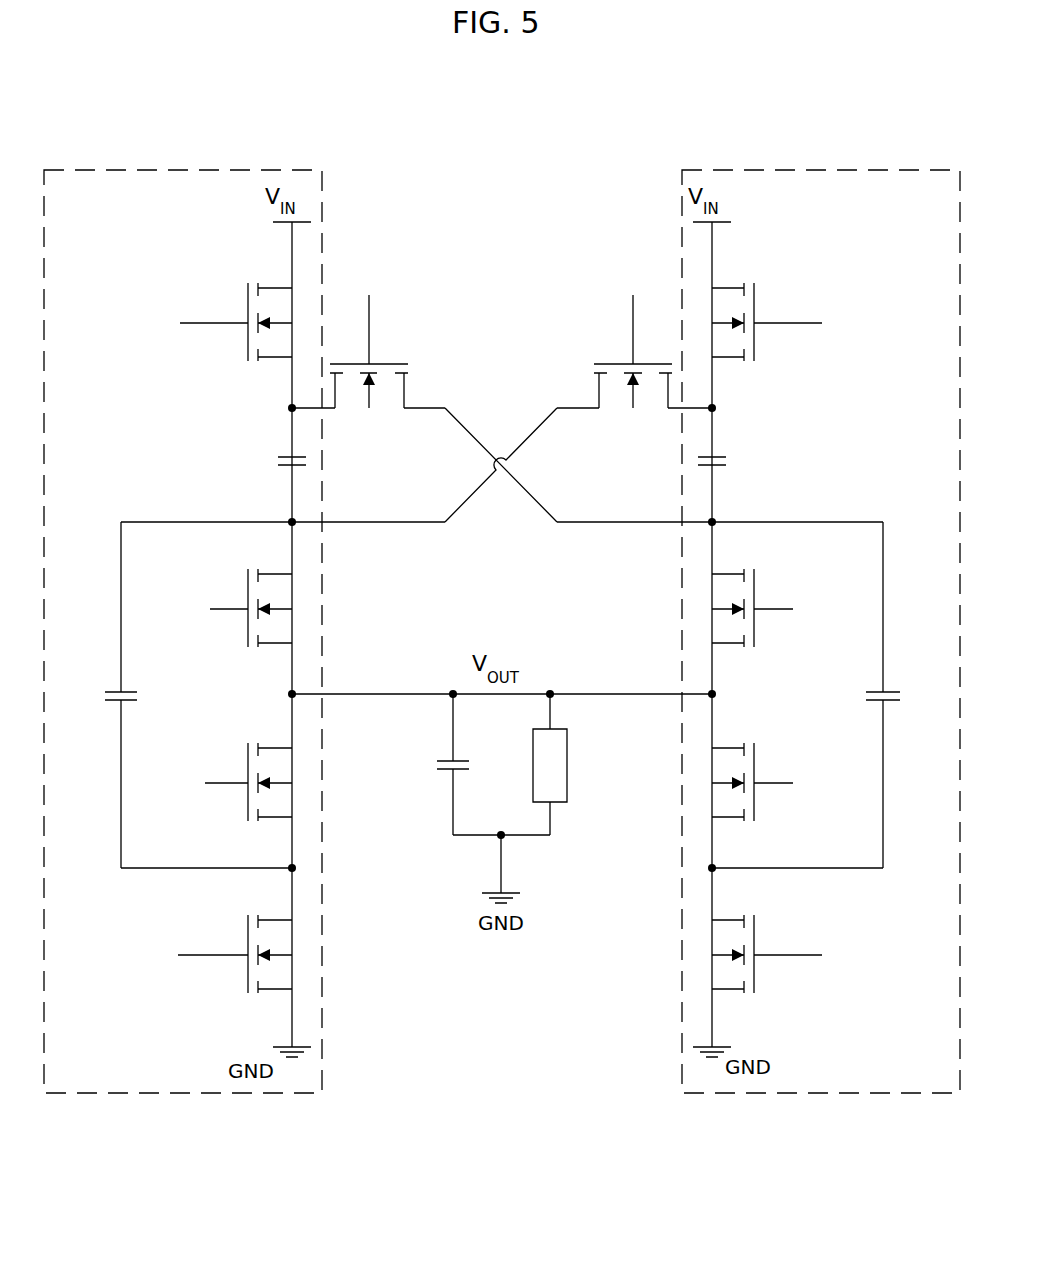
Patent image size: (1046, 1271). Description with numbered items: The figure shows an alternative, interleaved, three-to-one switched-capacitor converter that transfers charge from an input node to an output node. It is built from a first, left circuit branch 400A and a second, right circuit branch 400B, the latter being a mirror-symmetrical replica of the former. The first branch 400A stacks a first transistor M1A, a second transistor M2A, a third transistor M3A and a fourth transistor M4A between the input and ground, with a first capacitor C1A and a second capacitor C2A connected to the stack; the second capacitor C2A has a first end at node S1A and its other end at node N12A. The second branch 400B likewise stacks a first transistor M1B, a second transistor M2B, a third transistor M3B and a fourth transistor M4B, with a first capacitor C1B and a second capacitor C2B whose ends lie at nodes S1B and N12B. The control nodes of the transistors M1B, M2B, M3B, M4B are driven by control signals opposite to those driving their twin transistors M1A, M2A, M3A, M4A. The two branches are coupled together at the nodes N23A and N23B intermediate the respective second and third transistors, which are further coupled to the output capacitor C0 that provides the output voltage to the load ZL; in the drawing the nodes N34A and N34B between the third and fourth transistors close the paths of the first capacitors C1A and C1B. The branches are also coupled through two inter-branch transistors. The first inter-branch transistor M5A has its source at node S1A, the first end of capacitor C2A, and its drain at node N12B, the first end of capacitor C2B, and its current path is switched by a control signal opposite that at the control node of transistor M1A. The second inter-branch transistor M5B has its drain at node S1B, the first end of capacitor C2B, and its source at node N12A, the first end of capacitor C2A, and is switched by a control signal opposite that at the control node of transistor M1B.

The first circuit branch 400A is at (164, 183).
The second circuit branch 400B is at (833, 183).
The first transistor M1A is at (272, 303).
The second transistor M2A is at (278, 598).
The third transistor M3A is at (278, 760).
The fourth transistor M4A is at (278, 938).
The first inter-branch transistor M5A is at (353, 399).
The first transistor M1B is at (728, 300).
The second transistor M2B is at (727, 593).
The third transistor M3B is at (725, 767).
The fourth transistor M4B is at (722, 940).
The second inter-branch transistor M5B is at (650, 403).
The first capacitor C1A is at (127, 700).
The second capacitor C2A is at (280, 462).
The first capacitor C1B is at (870, 700).
The second capacitor C2B is at (727, 464).
The output capacitor C0 is at (440, 765).
The load ZL is at (558, 782).
The source node S1A is at (292, 408).
The drain node S1B is at (716, 408).
The source node N12A is at (292, 522).
The drain node N12B is at (716, 519).
The node between M2A and M3A N23A is at (292, 694).
The node between M2B and M3B N23B is at (716, 692).
The node between M3A and M4A N34A is at (292, 868).
The node between M3B and M4B N34B is at (716, 866).